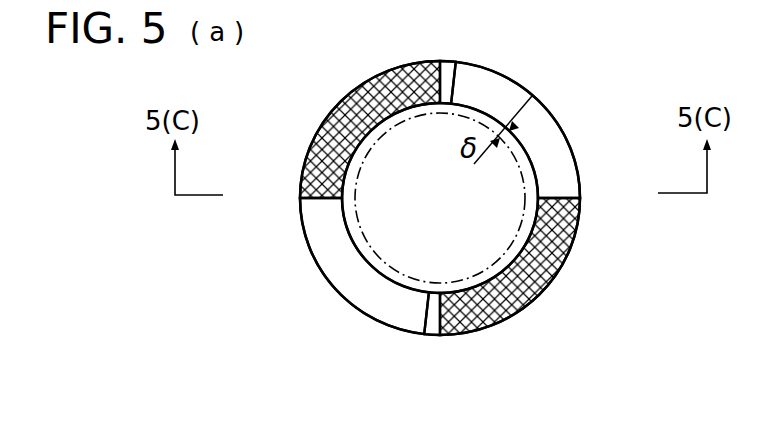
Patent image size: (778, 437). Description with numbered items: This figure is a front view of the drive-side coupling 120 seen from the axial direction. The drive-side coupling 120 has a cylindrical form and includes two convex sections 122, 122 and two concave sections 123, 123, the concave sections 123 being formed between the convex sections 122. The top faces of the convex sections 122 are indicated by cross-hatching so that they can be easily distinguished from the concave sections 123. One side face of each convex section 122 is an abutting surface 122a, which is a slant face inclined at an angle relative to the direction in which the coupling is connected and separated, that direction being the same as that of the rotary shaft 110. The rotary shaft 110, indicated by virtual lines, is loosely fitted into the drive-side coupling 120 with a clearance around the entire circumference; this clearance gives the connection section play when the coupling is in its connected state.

The rotary shaft 110 is at (350, 223).
The drive-side coupling 120 is at (597, 107).
The convex section 122 is at (354, 103).
The abutting surface 122a is at (445, 72).
The concave section 123 is at (500, 82).